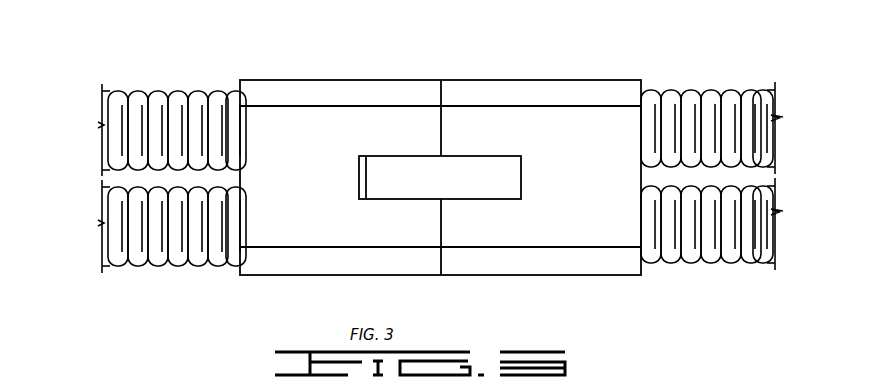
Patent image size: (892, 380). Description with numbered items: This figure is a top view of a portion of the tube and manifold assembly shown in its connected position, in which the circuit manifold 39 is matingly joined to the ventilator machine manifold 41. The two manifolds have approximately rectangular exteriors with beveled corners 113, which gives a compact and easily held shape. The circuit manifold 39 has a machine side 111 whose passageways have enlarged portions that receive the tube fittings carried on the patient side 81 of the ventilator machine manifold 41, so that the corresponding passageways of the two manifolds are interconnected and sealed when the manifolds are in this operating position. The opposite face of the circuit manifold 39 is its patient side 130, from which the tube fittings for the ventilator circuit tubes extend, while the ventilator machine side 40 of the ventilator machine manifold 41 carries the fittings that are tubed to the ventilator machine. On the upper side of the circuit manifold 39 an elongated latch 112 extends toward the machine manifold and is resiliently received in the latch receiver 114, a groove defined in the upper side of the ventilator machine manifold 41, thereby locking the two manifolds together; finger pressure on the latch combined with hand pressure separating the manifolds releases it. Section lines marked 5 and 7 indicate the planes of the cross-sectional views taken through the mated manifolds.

The section line 5- 5 is at (553, 43).
The section line 7- 7 is at (323, 176).
The circuit manifold 39 is at (300, 207).
The ventilator machine side 40 is at (645, 258).
The ventilator machine manifold 41 is at (594, 212).
The patient side 81 is at (441, 262).
The machine side 111 is at (441, 262).
The latch 112 is at (450, 175).
The beveled corners 113 is at (612, 92).
The latch receiver 114 is at (497, 173).
The patient side 130 is at (237, 270).